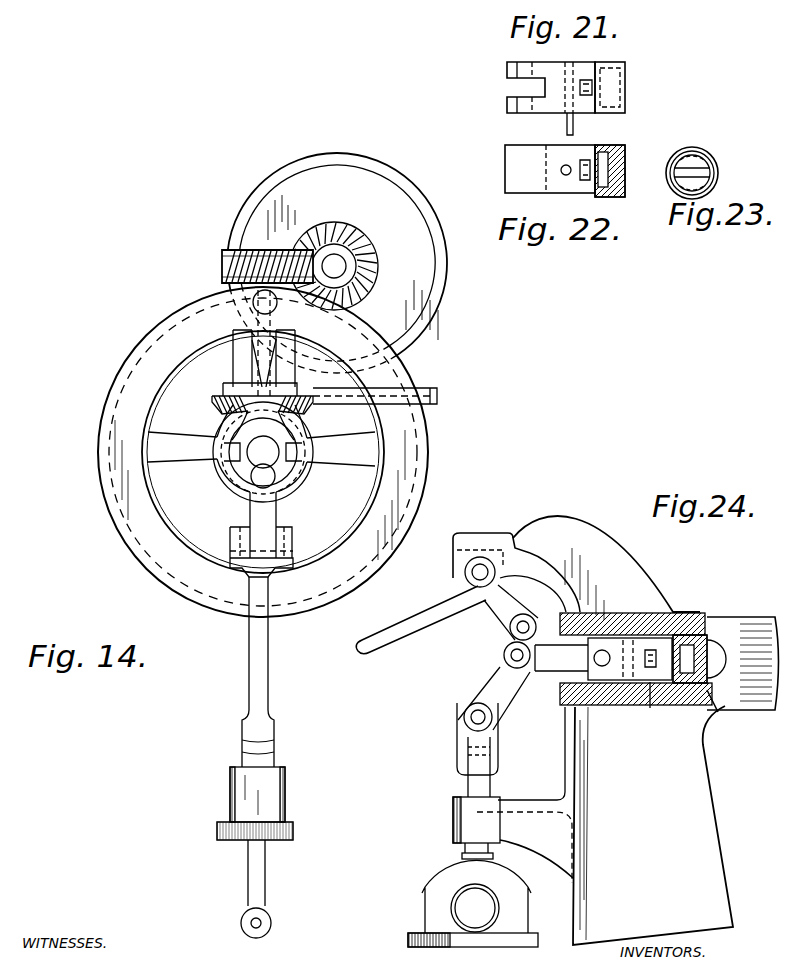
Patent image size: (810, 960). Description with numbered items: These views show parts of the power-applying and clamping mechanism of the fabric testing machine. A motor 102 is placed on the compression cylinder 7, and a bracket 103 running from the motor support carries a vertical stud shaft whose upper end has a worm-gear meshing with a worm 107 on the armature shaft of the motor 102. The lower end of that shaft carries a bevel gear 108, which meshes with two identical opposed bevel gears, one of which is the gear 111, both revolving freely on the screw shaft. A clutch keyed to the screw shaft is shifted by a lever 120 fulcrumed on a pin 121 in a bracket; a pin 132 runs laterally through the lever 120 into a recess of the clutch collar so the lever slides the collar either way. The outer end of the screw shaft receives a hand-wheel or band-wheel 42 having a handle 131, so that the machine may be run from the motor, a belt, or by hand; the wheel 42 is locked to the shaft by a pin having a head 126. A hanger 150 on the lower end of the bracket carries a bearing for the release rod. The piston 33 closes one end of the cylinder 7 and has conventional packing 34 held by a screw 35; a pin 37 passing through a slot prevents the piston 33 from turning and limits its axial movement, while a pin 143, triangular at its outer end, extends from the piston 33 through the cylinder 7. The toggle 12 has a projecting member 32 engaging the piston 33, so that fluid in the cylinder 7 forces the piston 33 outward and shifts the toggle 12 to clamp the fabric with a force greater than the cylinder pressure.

In FIG. 14, the hand-wheel 42 is at (106, 366).
In FIG. 14, the motor 102 is at (335, 177).
In FIG. 14, the worm 107 is at (377, 258).
In FIG. 14, the handle 131 is at (282, 304).
In FIG. 14, the bracket 103 is at (227, 358).
In FIG. 14, the bevel gear 108 is at (216, 401).
In FIG. 14, the bevel gear 111 is at (219, 480).
In FIG. 14, the pin 132 is at (222, 452).
In FIG. 14, the head 126 is at (250, 489).
In FIG. 14, the pin 121 is at (292, 548).
In FIG. 14, the lever 120 is at (270, 675).
In FIG. 14, the hanger 150 is at (272, 915).
In FIG. 21, the piston 33 is at (559, 54).
In FIG. 22, the piston 33 is at (561, 200).
In FIG. 24, the piston 33 is at (667, 692).
In FIG. 21, the packing 34 is at (626, 58).
In FIG. 24, the packing 34 is at (706, 690).
In FIG. 21, the pin 37 is at (576, 119).
In FIG. 24, the pin 37 is at (655, 652).
In FIG. 21, the pin 143 is at (557, 131).
In FIG. 24, the pin 143 is at (650, 708).
In FIG. 24, the toggle 12 is at (488, 621).
In FIG. 24, the projecting member 32 is at (554, 682).
In FIG. 24, the compression cylinder 7 is at (744, 611).
In FIG. 24, the screw 35 is at (713, 720).